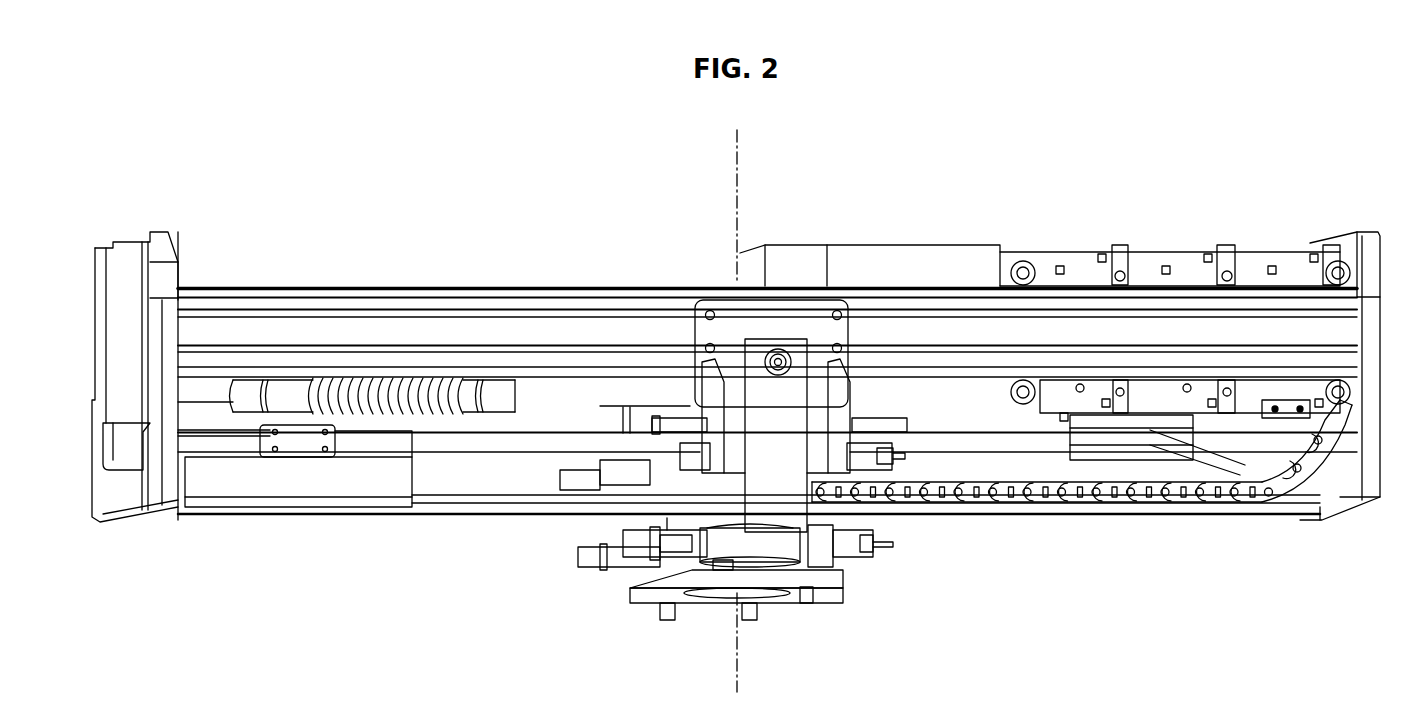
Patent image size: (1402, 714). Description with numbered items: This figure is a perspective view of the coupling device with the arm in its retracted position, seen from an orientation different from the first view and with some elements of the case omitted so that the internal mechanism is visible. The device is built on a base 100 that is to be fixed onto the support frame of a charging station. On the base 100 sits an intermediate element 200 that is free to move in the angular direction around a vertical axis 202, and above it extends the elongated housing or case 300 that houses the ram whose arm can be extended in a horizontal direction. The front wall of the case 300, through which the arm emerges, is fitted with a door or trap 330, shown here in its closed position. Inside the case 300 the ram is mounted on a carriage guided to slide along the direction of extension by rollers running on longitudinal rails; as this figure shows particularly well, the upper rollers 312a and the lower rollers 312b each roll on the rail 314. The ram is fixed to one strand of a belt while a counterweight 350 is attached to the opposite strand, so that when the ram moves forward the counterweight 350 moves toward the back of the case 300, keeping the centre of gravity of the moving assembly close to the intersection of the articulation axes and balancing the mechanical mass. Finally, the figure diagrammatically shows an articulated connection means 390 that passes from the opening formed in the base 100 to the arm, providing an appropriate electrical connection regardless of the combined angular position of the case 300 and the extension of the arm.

The base 100 is at (766, 611).
The intermediate element 200 is at (786, 450).
The vertical axis 202 is at (737, 148).
The case 300 is at (1047, 334).
The upper rollers 312a is at (1030, 263).
The lower rollers 312b is at (1030, 400).
The rail 314 is at (510, 328).
The door 330 is at (128, 273).
The counterweight 350 is at (325, 477).
The articulated connection means 390 is at (1141, 491).